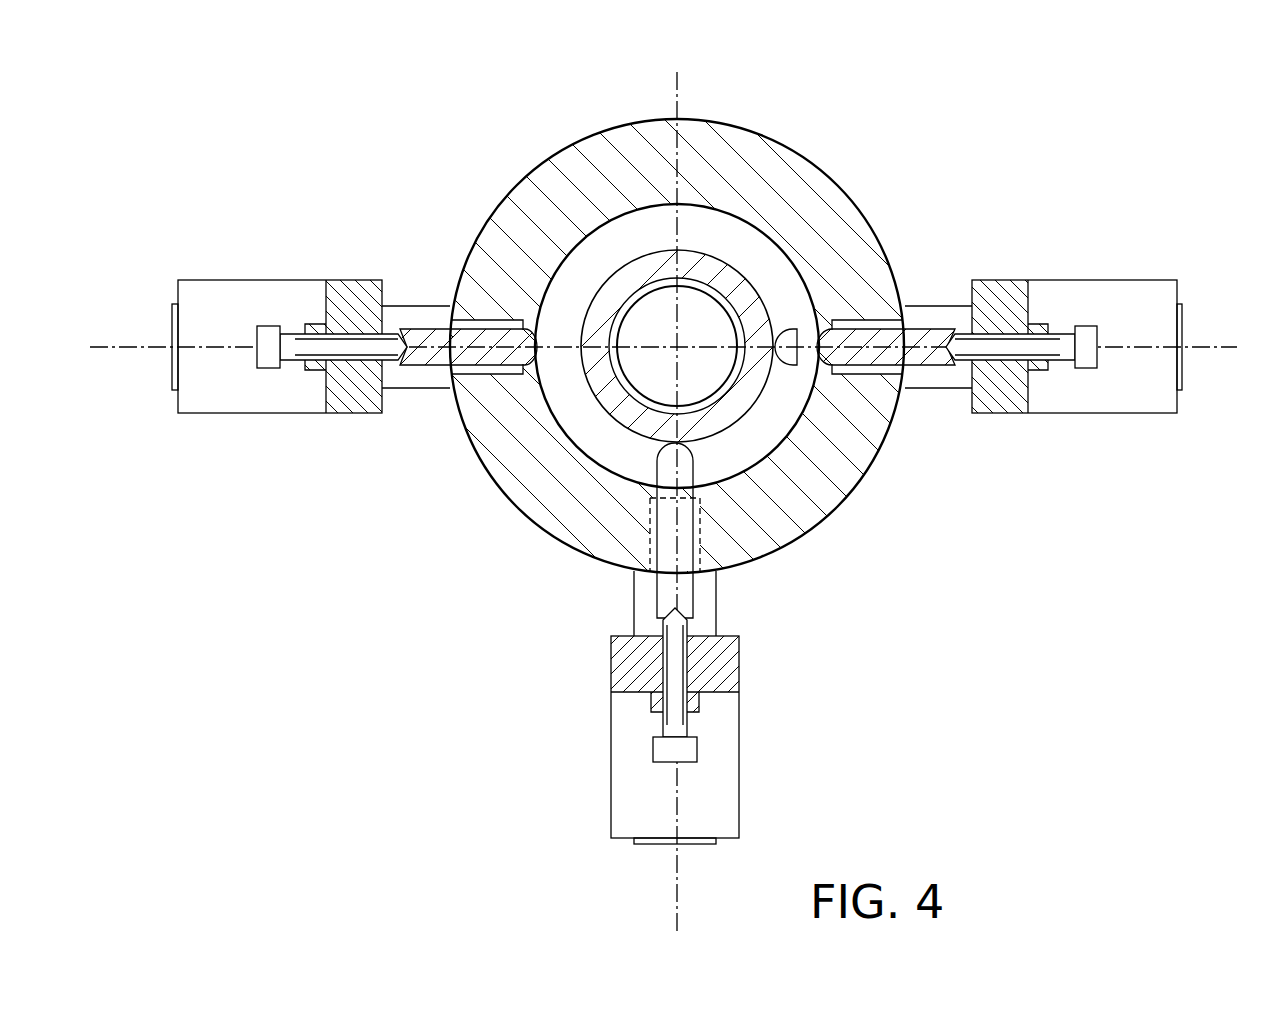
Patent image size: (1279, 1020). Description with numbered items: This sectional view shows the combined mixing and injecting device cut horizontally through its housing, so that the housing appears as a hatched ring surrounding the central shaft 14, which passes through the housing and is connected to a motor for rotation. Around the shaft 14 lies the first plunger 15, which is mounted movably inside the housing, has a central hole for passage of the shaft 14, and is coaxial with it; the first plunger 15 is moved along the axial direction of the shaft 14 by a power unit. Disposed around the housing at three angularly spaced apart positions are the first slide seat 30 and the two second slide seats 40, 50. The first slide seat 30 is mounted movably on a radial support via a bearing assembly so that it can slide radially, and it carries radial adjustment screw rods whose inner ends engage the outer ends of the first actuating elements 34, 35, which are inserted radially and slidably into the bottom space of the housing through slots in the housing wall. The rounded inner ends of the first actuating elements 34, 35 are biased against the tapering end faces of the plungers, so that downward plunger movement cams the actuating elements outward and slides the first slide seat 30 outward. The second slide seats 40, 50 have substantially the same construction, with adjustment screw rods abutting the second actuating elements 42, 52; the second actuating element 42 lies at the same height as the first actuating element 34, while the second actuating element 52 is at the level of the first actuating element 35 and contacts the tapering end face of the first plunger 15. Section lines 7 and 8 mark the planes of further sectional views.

The section line 7- 7 is at (678, 885).
The section line 8- 8 is at (1237, 375).
The central shaft 14 is at (715, 312).
The first plunger 15 is at (717, 268).
The first slide seat 30 is at (1062, 287).
The first actuating element 34 is at (877, 338).
The first actuating element 35 is at (796, 341).
The second slide seat 40 is at (316, 283).
The second actuating element 42 is at (437, 331).
The second slide seat 50 is at (739, 722).
The second actuating element 52 is at (682, 462).